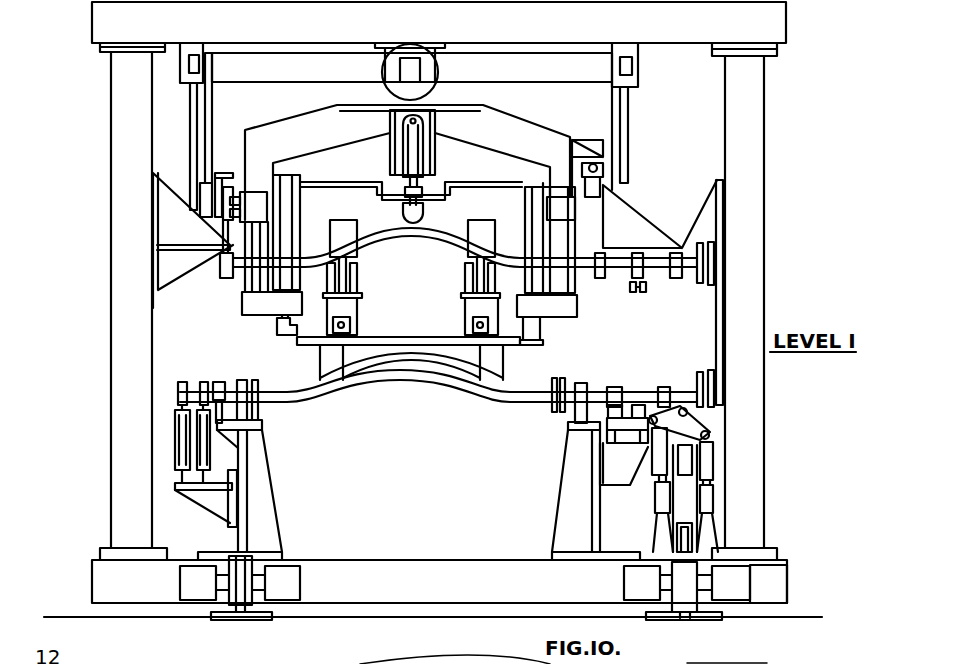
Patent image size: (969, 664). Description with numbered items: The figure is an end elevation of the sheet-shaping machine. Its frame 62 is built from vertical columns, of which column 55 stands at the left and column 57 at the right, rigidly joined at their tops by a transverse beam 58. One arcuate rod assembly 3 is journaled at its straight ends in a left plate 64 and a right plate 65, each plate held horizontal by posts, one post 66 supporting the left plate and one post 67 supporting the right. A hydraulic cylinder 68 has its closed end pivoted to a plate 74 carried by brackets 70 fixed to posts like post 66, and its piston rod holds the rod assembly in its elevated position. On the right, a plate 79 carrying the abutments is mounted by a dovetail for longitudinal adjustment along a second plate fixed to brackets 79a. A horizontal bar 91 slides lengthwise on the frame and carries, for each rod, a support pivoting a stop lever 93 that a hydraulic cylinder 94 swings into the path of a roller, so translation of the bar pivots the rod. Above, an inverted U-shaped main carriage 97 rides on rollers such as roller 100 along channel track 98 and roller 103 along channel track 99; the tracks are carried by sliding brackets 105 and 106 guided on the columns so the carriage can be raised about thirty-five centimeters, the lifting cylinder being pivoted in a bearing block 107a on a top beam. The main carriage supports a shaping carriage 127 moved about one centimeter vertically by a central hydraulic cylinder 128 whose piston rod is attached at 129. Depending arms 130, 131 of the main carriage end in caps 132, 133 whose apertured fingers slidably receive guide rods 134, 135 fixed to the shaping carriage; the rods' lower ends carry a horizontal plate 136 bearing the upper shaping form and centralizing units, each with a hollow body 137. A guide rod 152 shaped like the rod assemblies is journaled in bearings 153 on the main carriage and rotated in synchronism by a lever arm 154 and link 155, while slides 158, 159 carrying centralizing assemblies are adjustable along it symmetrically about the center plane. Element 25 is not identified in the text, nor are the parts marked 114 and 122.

The arcuate rod assembly 3 is at (406, 380).
The mold support 25 is at (496, 353).
The vertical column 55 is at (120, 190).
The vertical column 57 is at (752, 97).
The transverse beam 58 is at (768, 27).
The frame 62 is at (443, 577).
The left plate 64 is at (256, 386).
The right plate 65 is at (578, 386).
The post 66 is at (263, 506).
The post 67 is at (573, 500).
The hydraulic cylinder 68 is at (175, 440).
The bracket 70 is at (217, 502).
The plate 74 is at (180, 485).
The plate 79 is at (645, 443).
The bracket 79a is at (630, 470).
The horizontal bar 91 is at (683, 505).
The stop lever 93 is at (683, 423).
The hydraulic cylinder 94 is at (705, 465).
The main carriage 97 is at (523, 132).
The channel track 98 is at (228, 172).
The channel track 99 is at (600, 195).
The roller 100 is at (233, 193).
The roller 103 is at (588, 220).
The sliding bracket 105 is at (173, 268).
The sliding bracket 106 is at (706, 200).
The bearing block 107a is at (415, 50).
The bracket 114 is at (640, 60).
The bracket 122 is at (183, 78).
The shaping carriage 127 is at (328, 158).
The hydraulic cylinder 128 is at (415, 140).
The piston rod attachment 129 is at (418, 192).
The depending arm 130 is at (255, 280).
The depending arm 131 is at (565, 278).
The cap 132 is at (258, 306).
The cap 133 is at (563, 308).
The guide rod 134 is at (280, 318).
The guide rod 135 is at (537, 323).
The horizontal plate 136 is at (398, 340).
The hollow body 137 is at (355, 308).
The guide rod 152 is at (415, 236).
The bearing 153 is at (647, 228).
The lever arm 154 is at (637, 293).
The link 155 is at (645, 287).
The slide 158 is at (342, 222).
The slide 159 is at (485, 228).